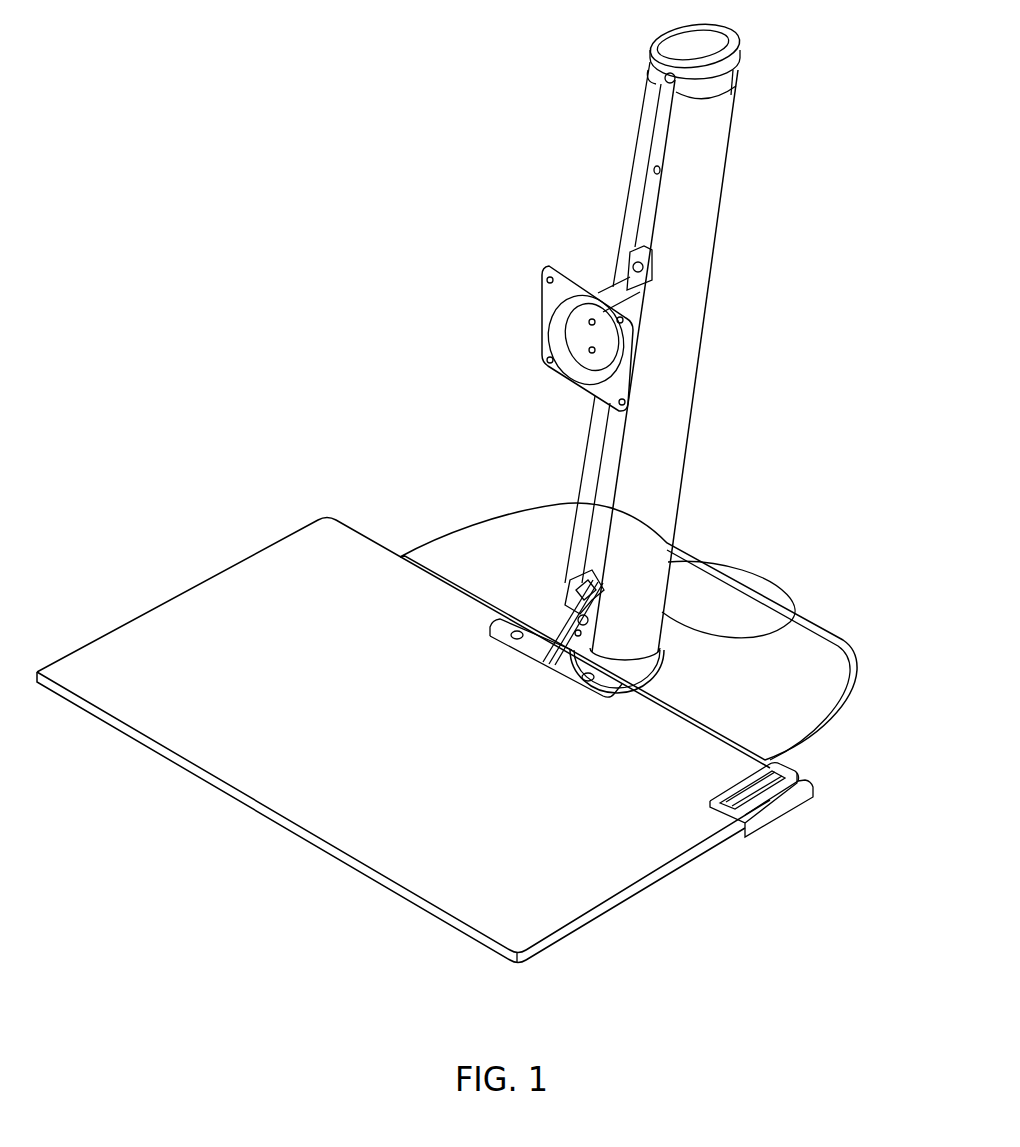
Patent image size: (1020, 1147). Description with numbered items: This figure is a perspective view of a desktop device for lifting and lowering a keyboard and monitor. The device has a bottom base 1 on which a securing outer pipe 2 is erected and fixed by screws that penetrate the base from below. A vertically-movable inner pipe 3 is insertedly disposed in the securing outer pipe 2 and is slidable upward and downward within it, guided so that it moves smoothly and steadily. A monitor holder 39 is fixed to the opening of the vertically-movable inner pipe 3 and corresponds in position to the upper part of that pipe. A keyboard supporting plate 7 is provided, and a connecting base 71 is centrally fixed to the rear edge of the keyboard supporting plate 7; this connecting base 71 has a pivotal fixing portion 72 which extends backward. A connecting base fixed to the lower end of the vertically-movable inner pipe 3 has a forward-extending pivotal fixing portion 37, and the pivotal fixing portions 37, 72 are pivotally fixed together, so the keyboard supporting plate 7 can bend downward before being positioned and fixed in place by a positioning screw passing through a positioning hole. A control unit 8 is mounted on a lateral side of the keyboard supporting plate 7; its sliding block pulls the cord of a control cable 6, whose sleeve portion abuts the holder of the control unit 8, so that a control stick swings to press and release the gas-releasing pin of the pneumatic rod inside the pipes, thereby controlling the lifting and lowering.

The bottom base 1 is at (793, 695).
The securing outer pipe 2 is at (700, 185).
The vertically-movable inner pipe 3 is at (705, 90).
The control cable 6 is at (687, 718).
The keyboard supporting plate 7 is at (235, 583).
The control unit 8 is at (782, 798).
The pivotal fixing portion 37 is at (572, 595).
The monitor holder 39 is at (571, 290).
The connecting base 71 is at (537, 645).
The pivotal fixing portion 72 is at (557, 637).